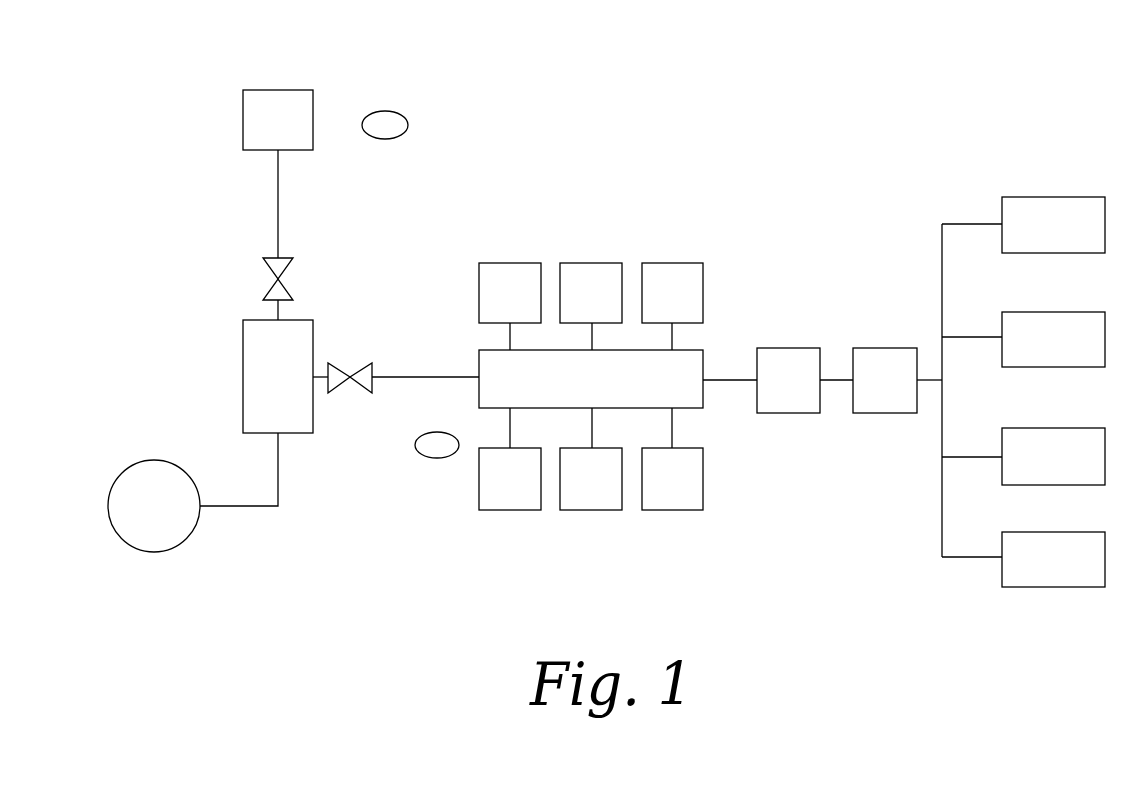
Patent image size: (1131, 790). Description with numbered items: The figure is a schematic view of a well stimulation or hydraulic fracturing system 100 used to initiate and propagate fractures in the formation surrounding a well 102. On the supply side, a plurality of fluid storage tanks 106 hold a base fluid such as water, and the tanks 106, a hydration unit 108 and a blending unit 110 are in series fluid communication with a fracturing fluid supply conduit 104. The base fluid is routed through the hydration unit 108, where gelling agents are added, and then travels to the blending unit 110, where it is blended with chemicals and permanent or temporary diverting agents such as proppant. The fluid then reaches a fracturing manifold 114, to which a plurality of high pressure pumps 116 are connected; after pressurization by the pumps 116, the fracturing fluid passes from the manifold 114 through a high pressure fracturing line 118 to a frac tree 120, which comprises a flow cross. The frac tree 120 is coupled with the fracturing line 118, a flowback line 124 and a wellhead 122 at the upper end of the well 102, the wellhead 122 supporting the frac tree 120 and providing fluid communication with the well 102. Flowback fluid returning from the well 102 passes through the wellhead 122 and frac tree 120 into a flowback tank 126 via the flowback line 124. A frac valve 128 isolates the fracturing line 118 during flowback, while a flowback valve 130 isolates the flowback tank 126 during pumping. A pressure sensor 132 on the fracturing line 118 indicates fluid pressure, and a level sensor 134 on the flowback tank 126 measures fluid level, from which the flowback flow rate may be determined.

The hydraulic fracturing system 100 is at (155, 53).
The well 102 is at (141, 461).
The fracturing fluid supply conduit 104 is at (730, 380).
The fluid storage tanks 106 is at (1023, 392).
The hydration unit 108 is at (897, 380).
The blending unit 110 is at (805, 380).
The fracturing manifold 114 is at (591, 379).
The high pressure pumps 116 is at (591, 386).
The high pressure fracturing line 118 is at (413, 377).
The frac tree 120 is at (278, 376).
The wellhead 122 is at (222, 508).
The flowback line 124 is at (278, 171).
The flowback tank 126 is at (278, 120).
The frac valve 128 is at (341, 366).
The flowback valve 130 is at (272, 270).
The pressure sensor 132 is at (436, 377).
The level sensor 134 is at (313, 110).